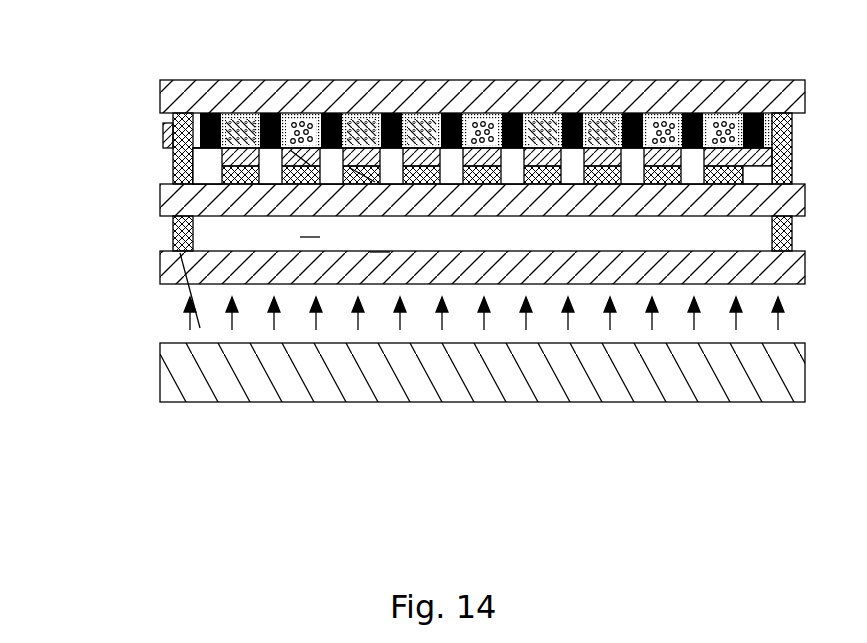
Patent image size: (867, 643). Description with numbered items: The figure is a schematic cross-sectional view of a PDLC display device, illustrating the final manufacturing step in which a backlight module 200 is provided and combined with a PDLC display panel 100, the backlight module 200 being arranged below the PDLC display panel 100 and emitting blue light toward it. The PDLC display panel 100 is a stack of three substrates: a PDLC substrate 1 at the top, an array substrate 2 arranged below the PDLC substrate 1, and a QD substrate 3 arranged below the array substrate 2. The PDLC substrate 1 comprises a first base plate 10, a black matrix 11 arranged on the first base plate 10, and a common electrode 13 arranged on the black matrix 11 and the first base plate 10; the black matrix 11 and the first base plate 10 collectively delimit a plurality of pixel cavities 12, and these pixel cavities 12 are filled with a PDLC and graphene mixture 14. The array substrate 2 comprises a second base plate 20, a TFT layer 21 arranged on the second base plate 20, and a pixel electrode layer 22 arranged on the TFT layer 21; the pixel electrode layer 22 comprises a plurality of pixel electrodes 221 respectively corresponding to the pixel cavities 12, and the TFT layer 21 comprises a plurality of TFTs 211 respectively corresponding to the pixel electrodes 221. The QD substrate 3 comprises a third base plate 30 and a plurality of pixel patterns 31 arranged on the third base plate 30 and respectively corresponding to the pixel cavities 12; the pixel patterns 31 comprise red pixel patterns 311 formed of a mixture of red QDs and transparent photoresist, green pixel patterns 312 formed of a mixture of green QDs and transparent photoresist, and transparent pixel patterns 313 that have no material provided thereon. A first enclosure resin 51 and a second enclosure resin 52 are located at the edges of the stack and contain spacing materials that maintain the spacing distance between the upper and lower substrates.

The PDLC display panel 100 is at (454, 280).
The PDLC substrate 1 is at (489, 109).
The array substrate 2 is at (489, 127).
The QD substrate 3 is at (489, 371).
The first base plate 10 is at (767, 98).
The black matrix 11 is at (697, 113).
The pixel cavities 12 is at (665, 130).
The common electrode 13 is at (640, 118).
The PDLC and graphene mixture 14 is at (542, 120).
The second base plate 20 is at (795, 203).
The TFT layer 21 is at (524, 112).
The TFTs 211 is at (363, 170).
The pixel electrode layer 22 is at (524, 100).
The pixel electrodes 221 is at (303, 158).
The third base plate 30 is at (757, 283).
The pixel patterns 31 is at (306, 381).
The red pixel patterns 311 is at (230, 358).
The green pixel patterns 312 is at (310, 237).
The transparent pixel patterns 313 is at (380, 251).
The first enclosure resin 51 is at (793, 127).
The second enclosure resin 52 is at (793, 237).
The backlight module 200 is at (150, 343).